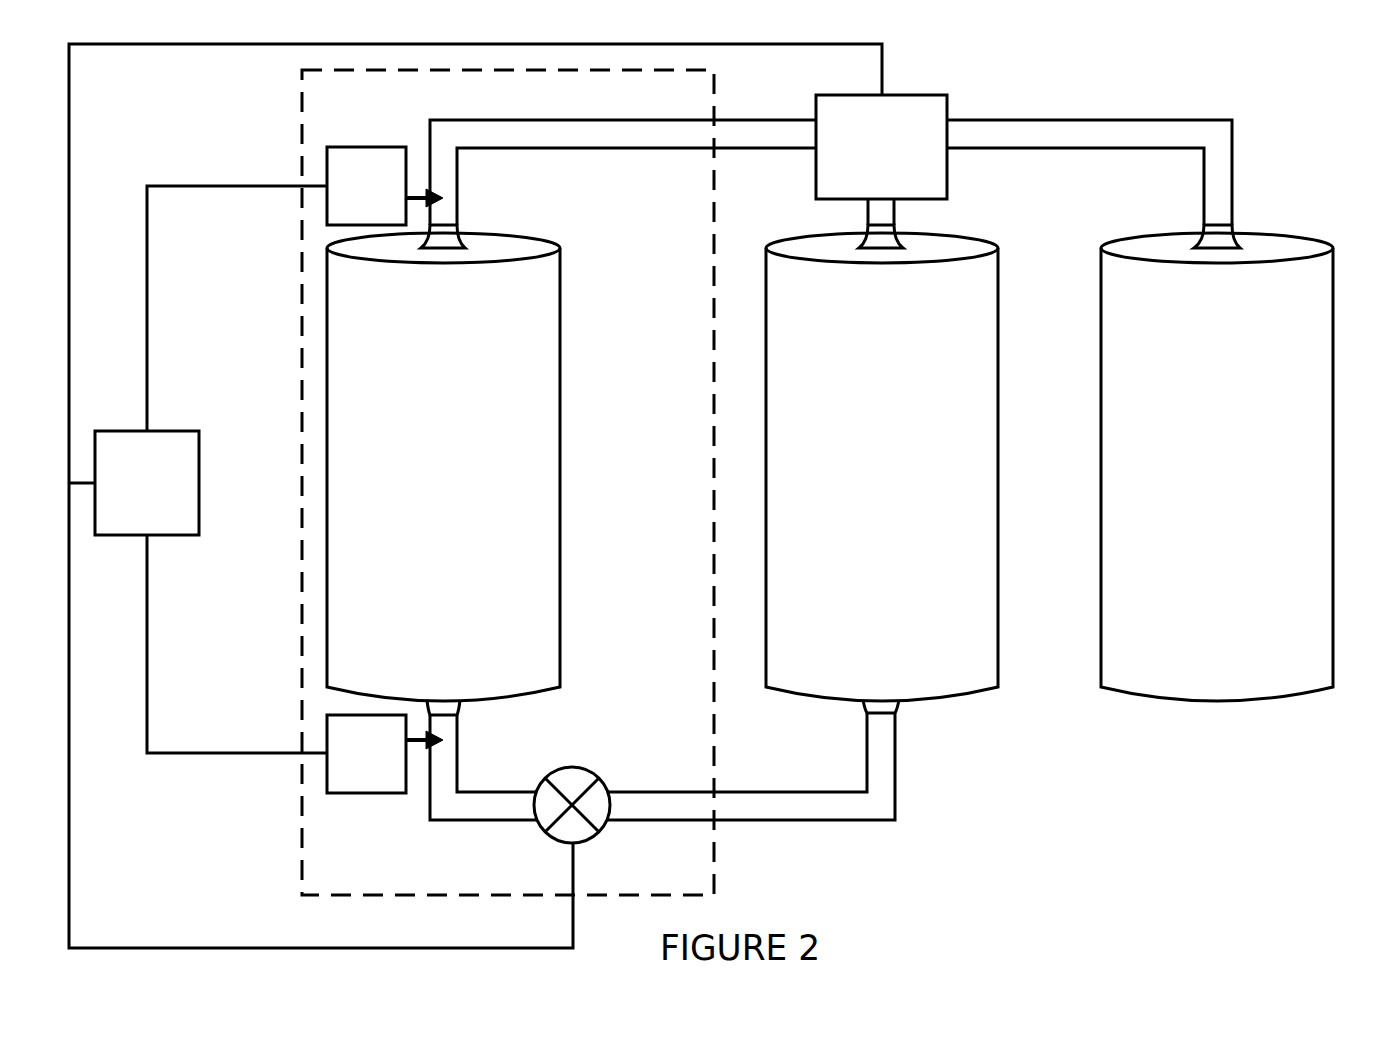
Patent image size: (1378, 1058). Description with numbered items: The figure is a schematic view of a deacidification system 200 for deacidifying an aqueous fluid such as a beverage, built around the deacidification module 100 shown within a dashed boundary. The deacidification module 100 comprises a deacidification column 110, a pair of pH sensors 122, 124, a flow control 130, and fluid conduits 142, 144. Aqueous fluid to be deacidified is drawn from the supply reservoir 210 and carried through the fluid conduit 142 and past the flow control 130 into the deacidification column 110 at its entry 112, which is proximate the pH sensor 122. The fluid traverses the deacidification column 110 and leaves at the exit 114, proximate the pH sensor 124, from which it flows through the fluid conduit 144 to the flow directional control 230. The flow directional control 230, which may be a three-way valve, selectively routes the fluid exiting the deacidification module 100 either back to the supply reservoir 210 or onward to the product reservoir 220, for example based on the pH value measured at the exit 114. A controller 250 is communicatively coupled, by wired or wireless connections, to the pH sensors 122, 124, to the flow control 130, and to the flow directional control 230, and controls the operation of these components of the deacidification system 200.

The deacidification module 100 is at (302, 96).
The deacidification column 110 is at (419, 489).
The entry 112 is at (470, 714).
The exit 114 is at (470, 215).
The pH sensor 122 is at (342, 769).
The pH sensor 124 is at (342, 200).
The flow control 130 is at (587, 768).
The fluid conduit 142 is at (455, 822).
The fluid conduit 144 is at (457, 120).
The deacidification system 200 is at (1308, 149).
The supply reservoir 210 is at (858, 489).
The product reservoir 220 is at (1193, 489).
The flow directional control 230 is at (858, 161).
The controller 250 is at (123, 497).